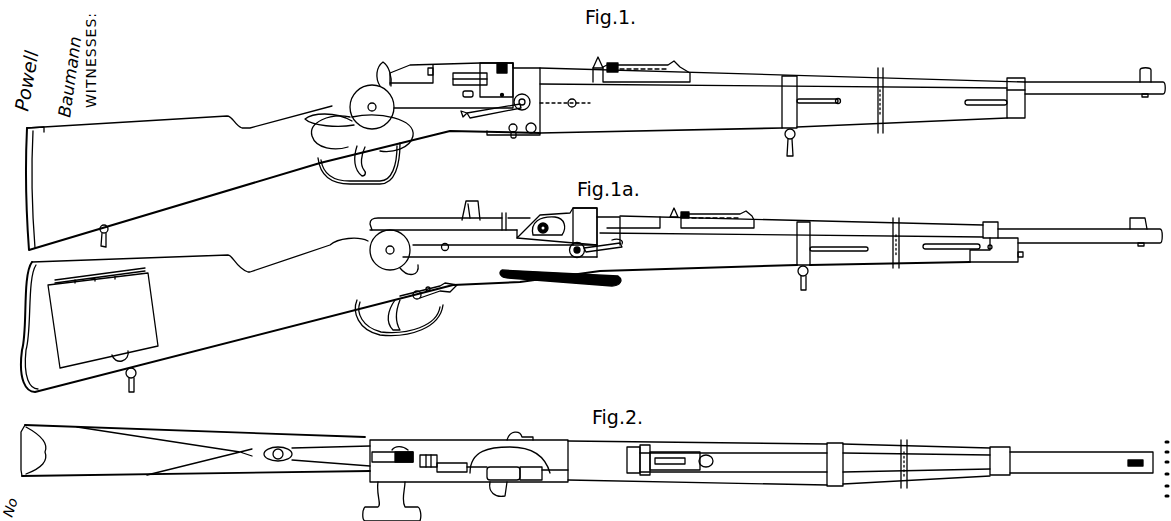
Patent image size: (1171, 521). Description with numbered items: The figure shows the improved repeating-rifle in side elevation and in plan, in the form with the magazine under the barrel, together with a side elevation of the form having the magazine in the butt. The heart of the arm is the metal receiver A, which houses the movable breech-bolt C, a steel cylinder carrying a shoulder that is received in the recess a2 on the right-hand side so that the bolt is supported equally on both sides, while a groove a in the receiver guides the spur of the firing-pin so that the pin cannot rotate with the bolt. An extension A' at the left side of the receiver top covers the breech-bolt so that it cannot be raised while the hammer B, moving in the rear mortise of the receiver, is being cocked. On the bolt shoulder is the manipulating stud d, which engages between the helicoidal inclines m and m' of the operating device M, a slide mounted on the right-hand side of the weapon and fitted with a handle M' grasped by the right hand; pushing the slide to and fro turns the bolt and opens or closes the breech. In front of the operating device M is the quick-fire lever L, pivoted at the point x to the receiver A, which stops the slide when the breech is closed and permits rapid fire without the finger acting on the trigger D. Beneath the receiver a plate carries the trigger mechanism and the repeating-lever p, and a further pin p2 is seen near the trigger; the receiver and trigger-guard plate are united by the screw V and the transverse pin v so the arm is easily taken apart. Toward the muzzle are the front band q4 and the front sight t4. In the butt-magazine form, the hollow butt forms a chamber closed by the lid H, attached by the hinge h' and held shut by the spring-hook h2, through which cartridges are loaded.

In FIG. 1, the receiver A is at (283, 178).
In FIG. 1A, the receiver A is at (495, 301).
In FIG. 2, the receiver A is at (587, 456).
In FIG. 1, the hammer B is at (373, 74).
In FIG. 1A, the hammer B is at (471, 204).
In FIG. 2, the hammer B is at (392, 461).
In FIG. 1, the breech-bolt C is at (432, 66).
In FIG. 1A, the breech-bolt C is at (504, 212).
In FIG. 1, the operating device M is at (465, 99).
In FIG. 1A, the operating device M is at (495, 233).
In FIG. 2, the operating device M is at (469, 470).
In FIG. 1, the handle M' is at (372, 107).
In FIG. 1A, the handle M' is at (394, 252).
In FIG. 2, the handle M' is at (392, 501).
In FIG. 1, the helicoidal incline m' is at (467, 72).
In FIG. 1A, the helicoidal incline m' is at (548, 214).
In FIG. 2, the helicoidal incline m' is at (503, 475).
In FIG. 1, the helicoidal incline m is at (496, 79).
In FIG. 1A, the helicoidal incline m is at (585, 220).
In FIG. 2, the helicoidal incline m is at (544, 475).
In FIG. 1, the manipulating stud d is at (463, 99).
In FIG. 1, the pivot x is at (524, 93).
In FIG. 1A, the pivot x is at (581, 250).
In FIG. 1, the quick-fire lever L is at (491, 118).
In FIG. 1A, the quick-fire lever L is at (604, 252).
In FIG. 2, the quick-fire lever L is at (506, 492).
In FIG. 1, the transverse pin v is at (558, 116).
In FIG. 1, the repeating-lever p is at (512, 137).
In FIG. 2, the repeating-lever p is at (522, 431).
In FIG. 1, the trigger D is at (359, 163).
In FIG. 1A, the trigger D is at (399, 318).
In FIG. 1, the front band q4 is at (1027, 100).
In FIG. 1A, the front band q4 is at (1009, 245).
In FIG. 1, the muzzle front sight t4 is at (1095, 91).
In FIG. 1A, the muzzle front sight t4 is at (1080, 241).
In FIG. 1A, the lid H is at (103, 320).
In FIG. 1A, the hinge h' is at (100, 275).
In FIG. 1A, the spring-hook h2 is at (115, 355).
In FIG. 1A, the recess a2 is at (519, 210).
In FIG. 2, the recess a2 is at (476, 467).
In FIG. 1A, the pin p2 is at (432, 296).
In FIG. 2, the screw V is at (278, 449).
In FIG. 2, the groove a is at (400, 443).
In FIG. 2, the extension A' is at (443, 460).